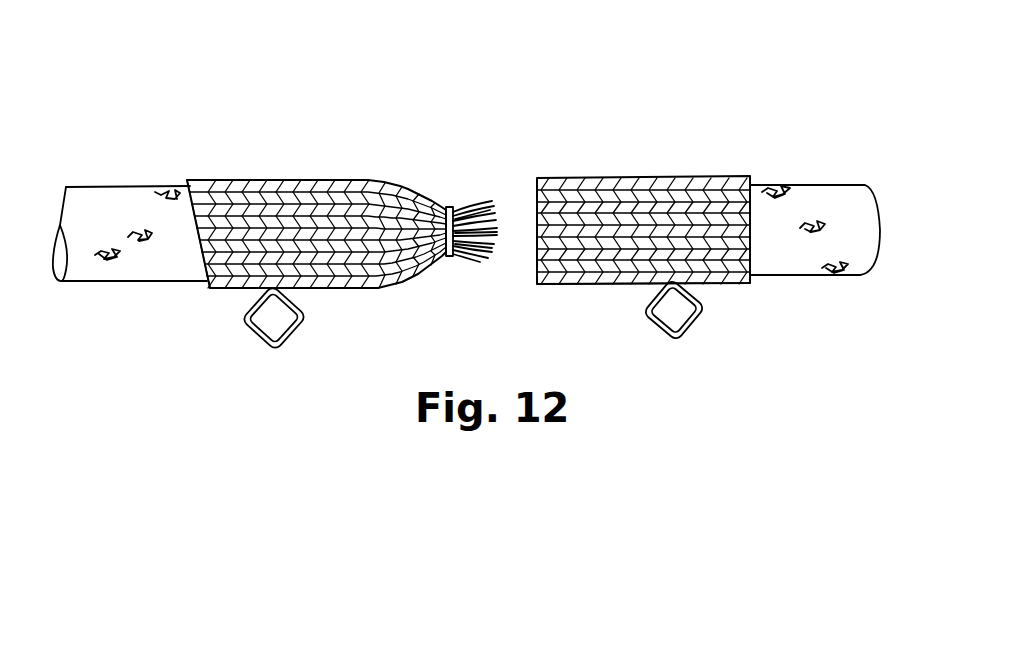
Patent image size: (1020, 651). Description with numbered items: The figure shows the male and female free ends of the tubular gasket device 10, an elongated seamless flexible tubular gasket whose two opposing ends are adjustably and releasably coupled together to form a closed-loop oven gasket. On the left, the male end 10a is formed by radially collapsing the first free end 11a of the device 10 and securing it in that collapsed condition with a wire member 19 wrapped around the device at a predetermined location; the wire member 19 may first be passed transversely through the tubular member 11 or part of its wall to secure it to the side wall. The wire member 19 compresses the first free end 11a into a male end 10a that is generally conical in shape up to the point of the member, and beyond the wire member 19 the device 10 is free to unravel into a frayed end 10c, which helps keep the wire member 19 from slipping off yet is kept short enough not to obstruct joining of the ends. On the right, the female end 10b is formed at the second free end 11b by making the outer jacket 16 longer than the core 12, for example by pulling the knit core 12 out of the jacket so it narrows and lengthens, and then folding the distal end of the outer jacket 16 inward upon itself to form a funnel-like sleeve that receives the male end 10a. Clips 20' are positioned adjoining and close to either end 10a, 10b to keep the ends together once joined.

The device 10 is at (560, 62).
The male end 10a is at (405, 178).
The female end 10b is at (535, 178).
The frayed end 10c is at (488, 250).
The tubular member 11 is at (203, 168).
The first free end 11a is at (368, 296).
The second free end 11b is at (570, 290).
The core 12 is at (138, 272).
The outer jacket 16 is at (298, 180).
The wire member 19 is at (454, 207).
The clips 20' is at (505, 361).